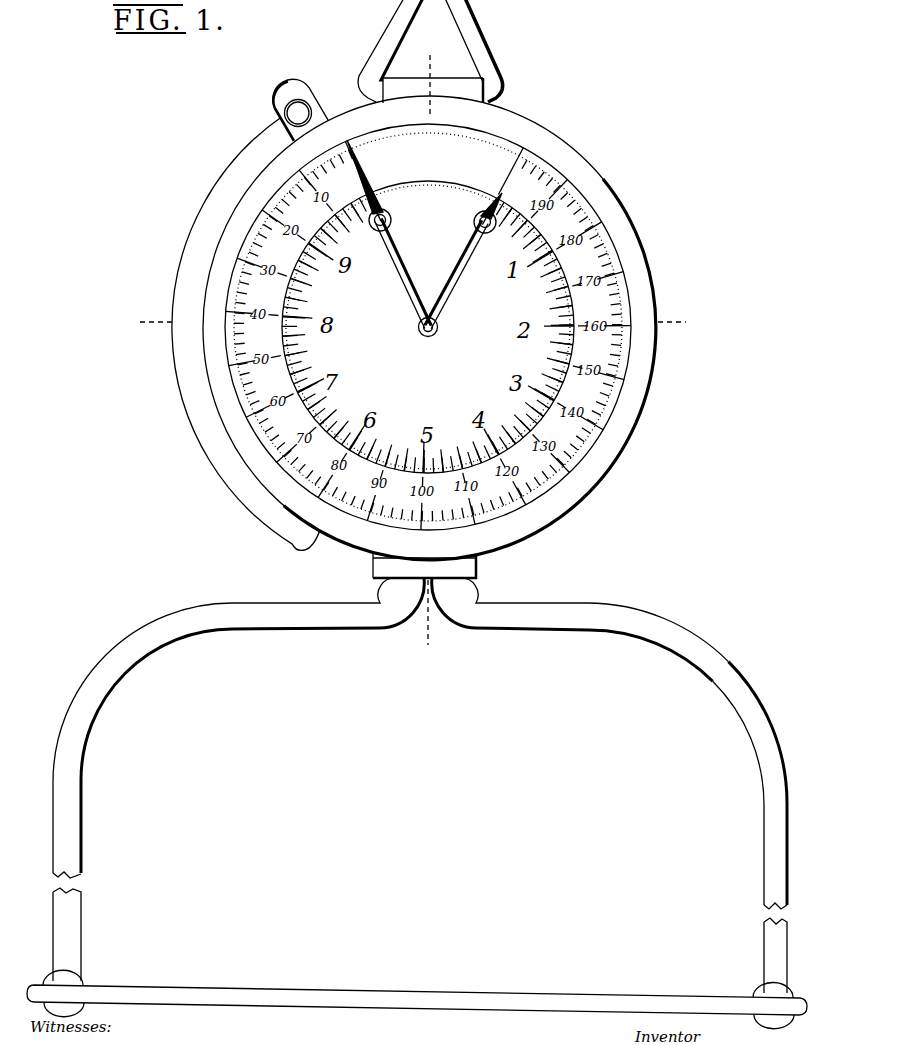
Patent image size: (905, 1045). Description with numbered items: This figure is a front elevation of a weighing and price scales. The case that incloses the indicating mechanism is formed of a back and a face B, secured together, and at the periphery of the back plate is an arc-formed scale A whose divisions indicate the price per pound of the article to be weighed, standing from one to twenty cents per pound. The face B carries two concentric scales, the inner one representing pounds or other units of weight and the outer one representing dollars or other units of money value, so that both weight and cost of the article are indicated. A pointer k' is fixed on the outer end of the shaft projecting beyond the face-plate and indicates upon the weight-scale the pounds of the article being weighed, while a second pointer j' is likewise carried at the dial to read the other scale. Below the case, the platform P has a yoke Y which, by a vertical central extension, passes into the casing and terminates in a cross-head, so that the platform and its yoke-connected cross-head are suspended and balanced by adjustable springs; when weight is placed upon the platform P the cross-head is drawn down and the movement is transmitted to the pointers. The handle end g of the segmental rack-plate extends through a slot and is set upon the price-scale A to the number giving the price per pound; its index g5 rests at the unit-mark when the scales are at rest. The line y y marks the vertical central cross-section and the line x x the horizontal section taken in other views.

The arc-formed scale A is at (234, 333).
The face B is at (429, 328).
The platform P is at (417, 998).
The yoke Y is at (420, 785).
The handle end g is at (301, 98).
The index disk of thumb piece g5 is at (307, 100).
The cost pointer arm j' is at (389, 234).
The pointer k' is at (463, 261).
The line x x is at (409, 322).
The line y y is at (425, 350).